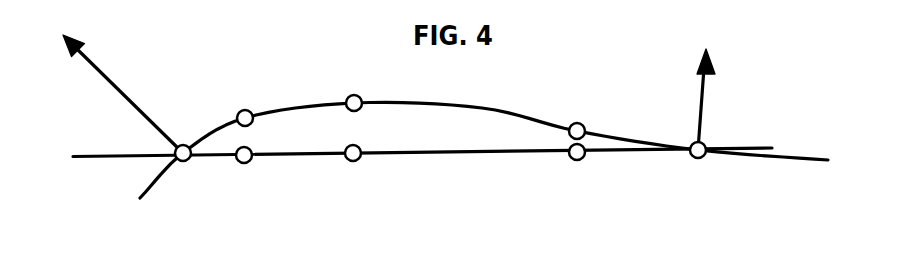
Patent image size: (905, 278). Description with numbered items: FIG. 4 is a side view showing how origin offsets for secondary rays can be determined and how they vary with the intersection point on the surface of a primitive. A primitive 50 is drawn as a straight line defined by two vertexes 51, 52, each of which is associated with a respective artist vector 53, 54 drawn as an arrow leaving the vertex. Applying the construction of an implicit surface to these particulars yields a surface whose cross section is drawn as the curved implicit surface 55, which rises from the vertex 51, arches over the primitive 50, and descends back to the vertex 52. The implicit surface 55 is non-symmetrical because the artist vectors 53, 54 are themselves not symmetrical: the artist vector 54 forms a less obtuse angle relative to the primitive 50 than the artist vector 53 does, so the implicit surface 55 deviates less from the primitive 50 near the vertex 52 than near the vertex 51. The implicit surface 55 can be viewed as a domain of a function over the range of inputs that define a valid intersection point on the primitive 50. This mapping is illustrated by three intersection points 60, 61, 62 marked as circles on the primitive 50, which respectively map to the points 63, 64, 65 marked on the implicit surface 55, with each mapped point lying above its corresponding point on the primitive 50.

The primitive 50 is at (422, 200).
The vertex 51 is at (193, 181).
The vertex 52 is at (734, 136).
The artist vector 53 is at (103, 72).
The artist vector 54 is at (734, 99).
The implicit surface 55 is at (484, 104).
The point on primitive 60 is at (270, 175).
The point on primitive 61 is at (372, 174).
The point on primitive 62 is at (601, 177).
The point on implicit surface 63 is at (232, 93).
The point on implicit surface 64 is at (390, 92).
The point on implicit surface 65 is at (601, 117).